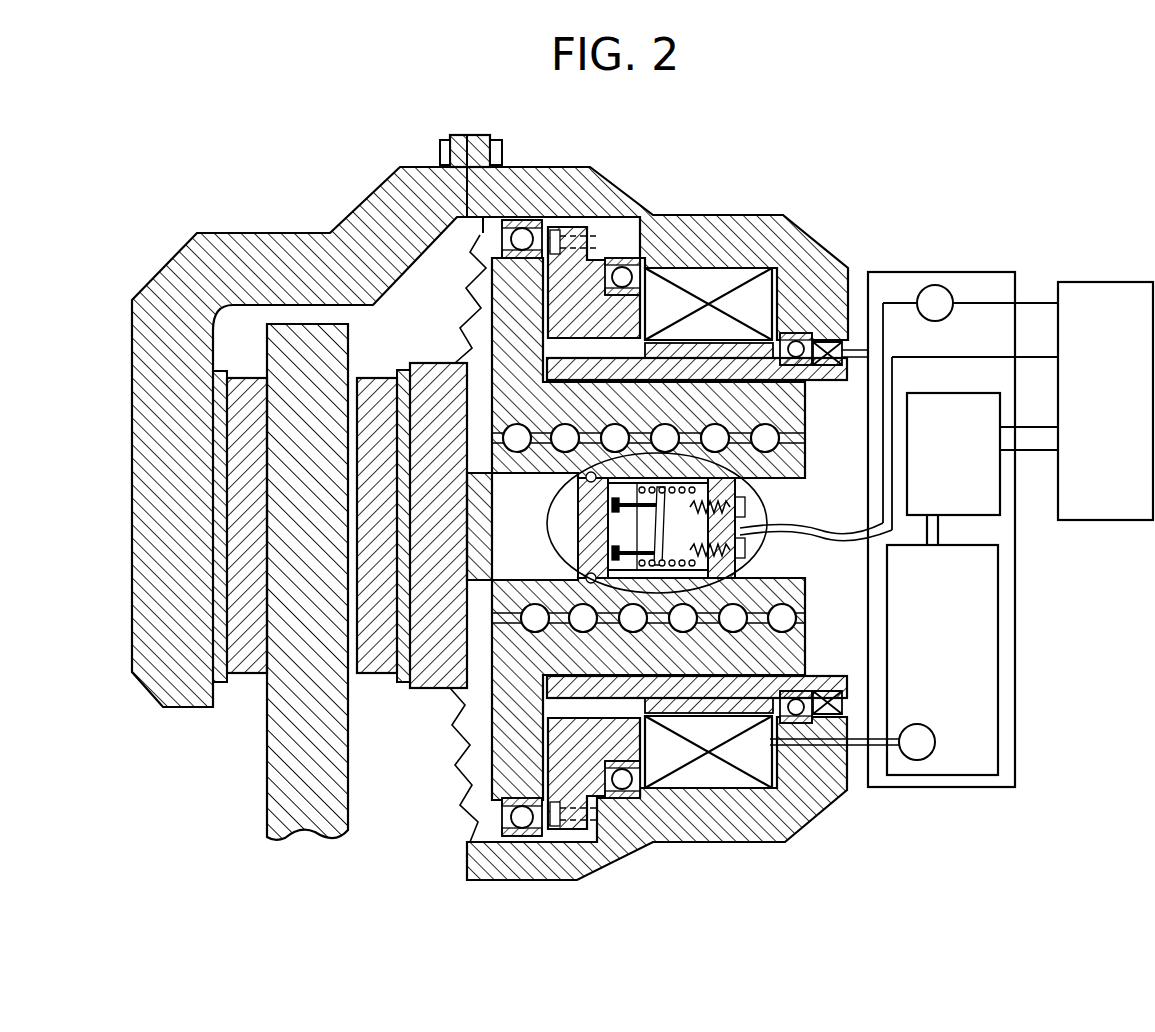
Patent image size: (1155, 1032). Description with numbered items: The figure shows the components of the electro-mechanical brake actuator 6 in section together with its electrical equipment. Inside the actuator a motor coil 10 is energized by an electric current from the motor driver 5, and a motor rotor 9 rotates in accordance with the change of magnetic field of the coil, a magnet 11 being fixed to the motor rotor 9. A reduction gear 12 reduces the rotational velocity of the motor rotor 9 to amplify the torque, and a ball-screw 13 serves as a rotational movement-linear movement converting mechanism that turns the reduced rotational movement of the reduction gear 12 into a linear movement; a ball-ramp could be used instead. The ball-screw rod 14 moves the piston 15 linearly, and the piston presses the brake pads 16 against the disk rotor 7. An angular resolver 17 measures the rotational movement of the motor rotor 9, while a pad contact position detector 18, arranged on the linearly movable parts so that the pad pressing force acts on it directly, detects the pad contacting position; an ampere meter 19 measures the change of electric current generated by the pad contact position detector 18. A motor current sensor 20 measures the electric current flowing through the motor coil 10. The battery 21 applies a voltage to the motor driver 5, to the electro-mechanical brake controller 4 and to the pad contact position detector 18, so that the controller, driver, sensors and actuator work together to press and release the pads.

The electro-mechanical brake controller 4 is at (1002, 500).
The motor driver 5 is at (1000, 675).
The electro-mechanical brake actuator 6 is at (173, 257).
The disk rotor 7 is at (302, 838).
The motor rotor 9 is at (637, 313).
The motor coil 10 is at (735, 278).
The magnet 11 is at (707, 707).
The reduction gear 12 is at (573, 290).
The ball-screw 13 is at (507, 283).
The ball-screw rod 14 is at (793, 462).
The piston 15 is at (420, 690).
The brake pads 16 is at (377, 377).
The angular resolver 17 is at (852, 540).
The pad contact position detector 18 is at (753, 565).
The ampere meter 19 is at (947, 285).
The motor current sensor 20 is at (920, 760).
The battery 21 is at (1120, 282).